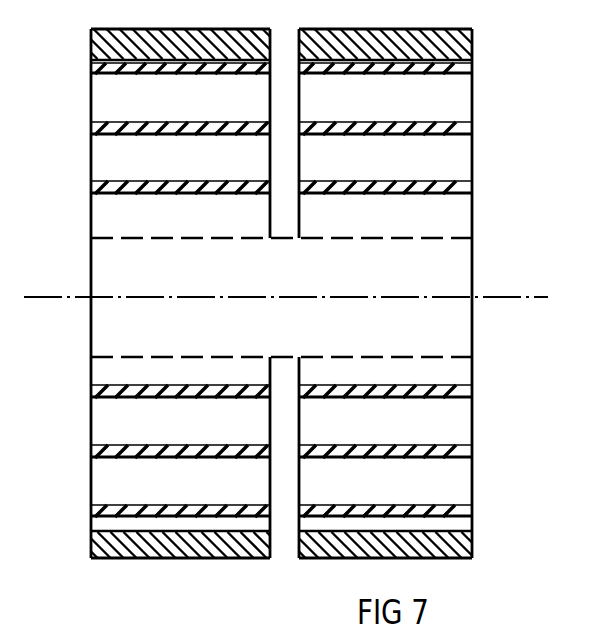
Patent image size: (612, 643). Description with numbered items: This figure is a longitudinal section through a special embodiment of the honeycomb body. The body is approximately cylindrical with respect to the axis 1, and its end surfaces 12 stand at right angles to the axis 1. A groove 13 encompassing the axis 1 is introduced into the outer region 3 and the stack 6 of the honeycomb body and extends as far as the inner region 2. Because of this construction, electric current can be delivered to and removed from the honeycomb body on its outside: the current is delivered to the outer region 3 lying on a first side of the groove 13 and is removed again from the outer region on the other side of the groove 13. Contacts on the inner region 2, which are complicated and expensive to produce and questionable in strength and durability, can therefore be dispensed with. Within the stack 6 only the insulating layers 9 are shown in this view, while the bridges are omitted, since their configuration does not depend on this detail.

The axis 1 is at (49, 298).
The inner region 2 is at (115, 331).
The outer region 3 is at (92, 551).
The stack 6 is at (458, 98).
The insulating layers 9 is at (153, 121).
The end surfaces 12 is at (473, 324).
The groove 13 is at (284, 550).